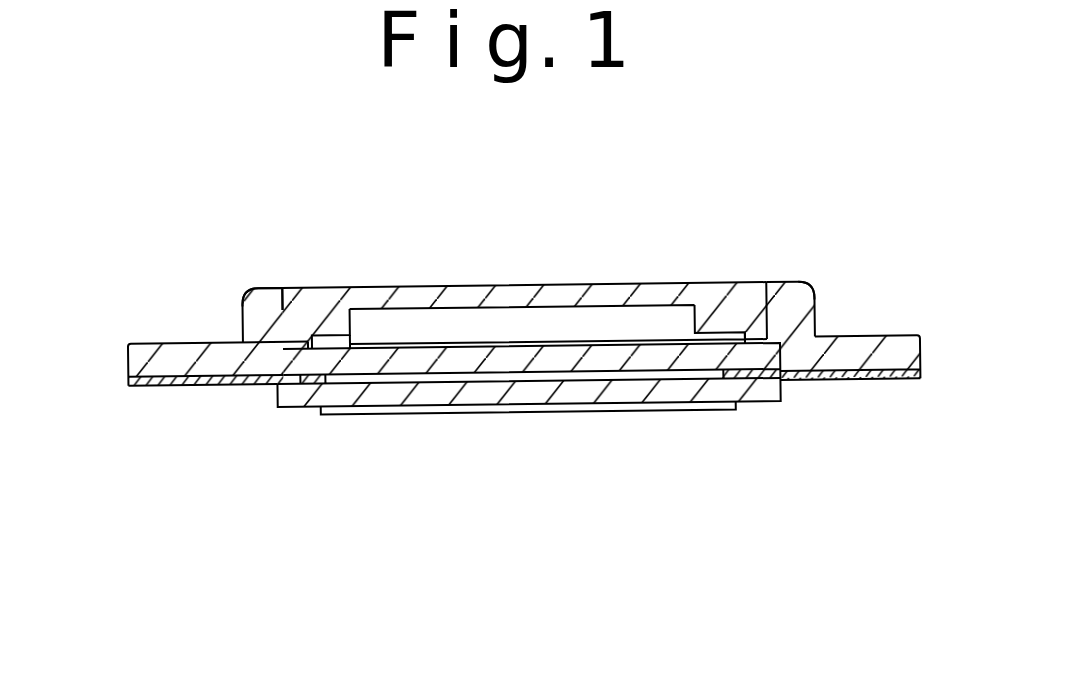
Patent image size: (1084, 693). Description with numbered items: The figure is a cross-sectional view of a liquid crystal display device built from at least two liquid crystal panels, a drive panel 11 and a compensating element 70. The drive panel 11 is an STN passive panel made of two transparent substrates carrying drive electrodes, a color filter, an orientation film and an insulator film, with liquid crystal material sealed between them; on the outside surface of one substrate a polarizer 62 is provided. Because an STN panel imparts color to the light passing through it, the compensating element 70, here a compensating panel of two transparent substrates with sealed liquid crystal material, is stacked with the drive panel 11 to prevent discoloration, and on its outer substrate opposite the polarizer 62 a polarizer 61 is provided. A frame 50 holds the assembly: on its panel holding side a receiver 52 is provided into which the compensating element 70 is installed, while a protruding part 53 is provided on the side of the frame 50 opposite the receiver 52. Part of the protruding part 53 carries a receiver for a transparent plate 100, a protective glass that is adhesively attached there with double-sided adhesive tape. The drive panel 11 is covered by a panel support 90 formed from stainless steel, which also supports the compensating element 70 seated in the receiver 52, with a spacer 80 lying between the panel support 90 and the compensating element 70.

The drive panel 11 is at (605, 385).
The frame 50 is at (893, 344).
The receiver 52 is at (243, 322).
The protruding part 53 is at (256, 298).
The polarizer 61 is at (413, 348).
The polarizer 62 is at (447, 408).
The compensating element 70 is at (613, 352).
The spacer 80 is at (303, 385).
The panel support 90 is at (205, 385).
The transparent plate 100 is at (357, 302).